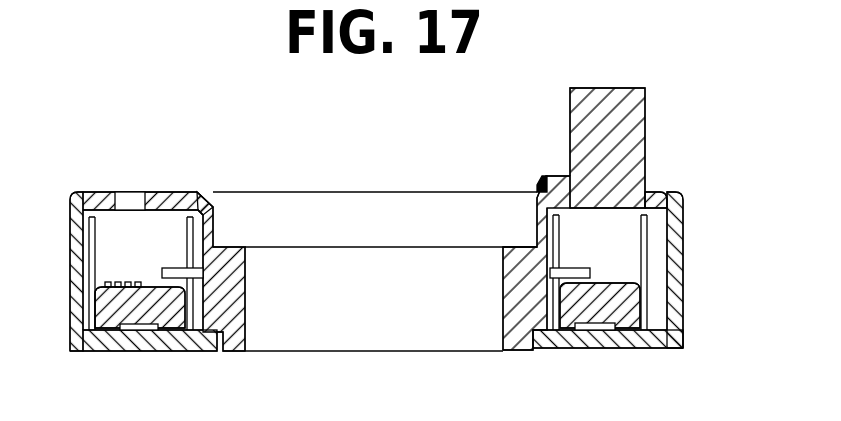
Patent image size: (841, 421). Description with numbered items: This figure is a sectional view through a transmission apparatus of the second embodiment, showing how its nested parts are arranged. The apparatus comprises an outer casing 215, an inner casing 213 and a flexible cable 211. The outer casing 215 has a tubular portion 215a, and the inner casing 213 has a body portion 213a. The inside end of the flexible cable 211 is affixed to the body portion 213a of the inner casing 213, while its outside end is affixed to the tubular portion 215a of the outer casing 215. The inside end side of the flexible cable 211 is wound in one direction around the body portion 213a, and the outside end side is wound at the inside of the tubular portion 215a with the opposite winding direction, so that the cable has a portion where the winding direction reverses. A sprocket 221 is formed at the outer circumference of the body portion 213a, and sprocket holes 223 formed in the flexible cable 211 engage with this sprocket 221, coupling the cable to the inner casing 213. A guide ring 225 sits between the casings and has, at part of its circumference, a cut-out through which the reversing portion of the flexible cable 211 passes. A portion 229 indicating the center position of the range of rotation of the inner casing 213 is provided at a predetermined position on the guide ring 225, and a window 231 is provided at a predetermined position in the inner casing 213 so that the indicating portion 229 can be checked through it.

The flexible cable 211 is at (537, 180).
The inner casing 213 is at (174, 192).
The body portion 213a is at (250, 252).
The outer casing 215 is at (593, 355).
The tubular portion 215a is at (683, 310).
The sprocket 221 is at (584, 236).
The sprocket holes 223 is at (563, 243).
The guide ring 225 is at (143, 310).
The indicating portion 229 is at (128, 284).
The window 231 is at (132, 200).